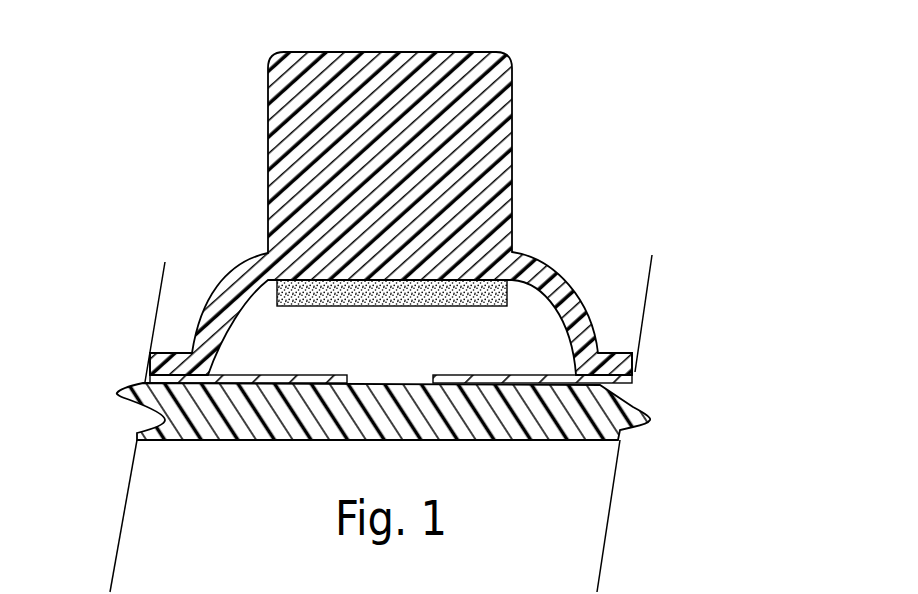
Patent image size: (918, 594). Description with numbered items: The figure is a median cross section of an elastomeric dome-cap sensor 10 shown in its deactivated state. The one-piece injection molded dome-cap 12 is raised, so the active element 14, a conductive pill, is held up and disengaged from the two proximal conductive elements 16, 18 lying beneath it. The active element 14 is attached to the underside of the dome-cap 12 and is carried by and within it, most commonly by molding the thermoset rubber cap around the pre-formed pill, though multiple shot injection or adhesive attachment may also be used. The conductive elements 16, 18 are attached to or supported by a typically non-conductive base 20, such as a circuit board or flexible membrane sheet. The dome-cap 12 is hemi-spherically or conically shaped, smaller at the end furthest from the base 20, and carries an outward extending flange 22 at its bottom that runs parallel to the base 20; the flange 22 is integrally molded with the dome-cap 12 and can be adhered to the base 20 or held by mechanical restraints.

The elastomeric dome-cap sensor 10 is at (587, 146).
The dome-cap 12 is at (491, 63).
The active element 14 is at (383, 297).
The conductive element 16 is at (628, 379).
The conductive element 18 is at (143, 380).
The base 20 is at (448, 440).
The flange 22 is at (173, 370).